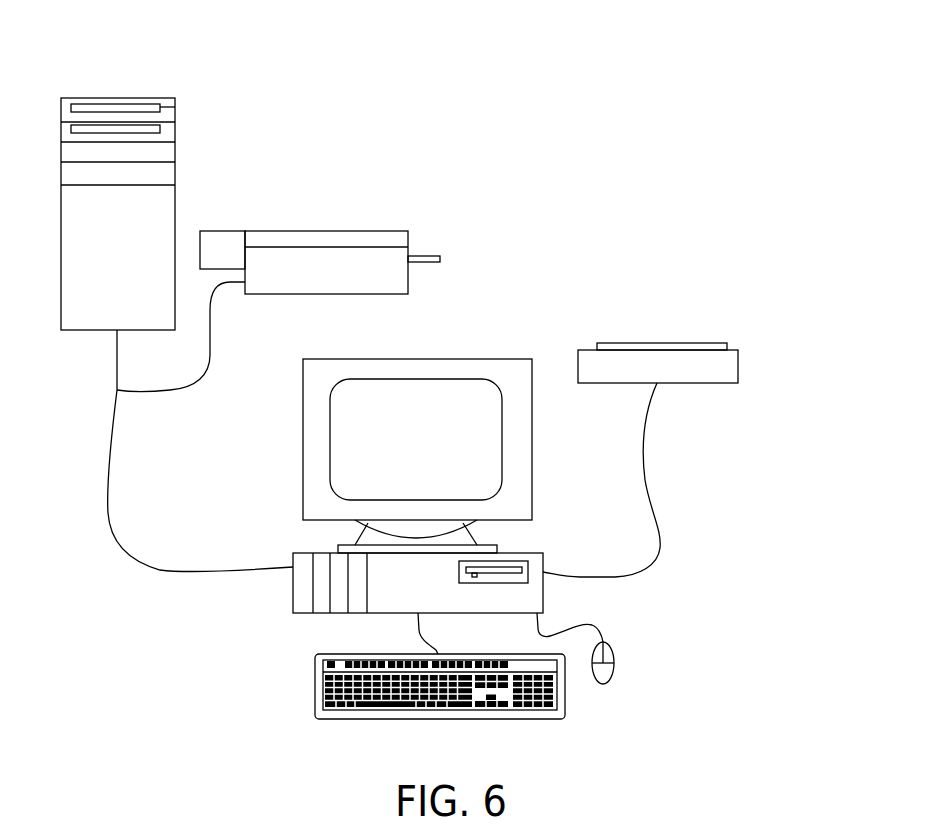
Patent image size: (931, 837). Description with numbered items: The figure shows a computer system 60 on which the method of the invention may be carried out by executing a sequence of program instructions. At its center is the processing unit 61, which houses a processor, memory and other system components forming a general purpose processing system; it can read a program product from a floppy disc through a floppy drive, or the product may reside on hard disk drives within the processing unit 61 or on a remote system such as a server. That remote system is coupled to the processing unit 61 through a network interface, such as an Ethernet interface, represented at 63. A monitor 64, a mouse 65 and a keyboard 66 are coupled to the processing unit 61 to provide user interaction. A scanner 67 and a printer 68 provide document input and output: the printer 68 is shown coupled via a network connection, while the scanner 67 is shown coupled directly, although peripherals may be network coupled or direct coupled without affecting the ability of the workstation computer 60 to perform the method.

The computer system 60 is at (652, 137).
The processing unit 61 is at (293, 598).
The network interface 63 is at (115, 420).
The monitor 64 is at (487, 359).
The mouse 65 is at (614, 672).
The keyboard 66 is at (315, 688).
The scanner 67 is at (683, 343).
The printer 68 is at (368, 231).